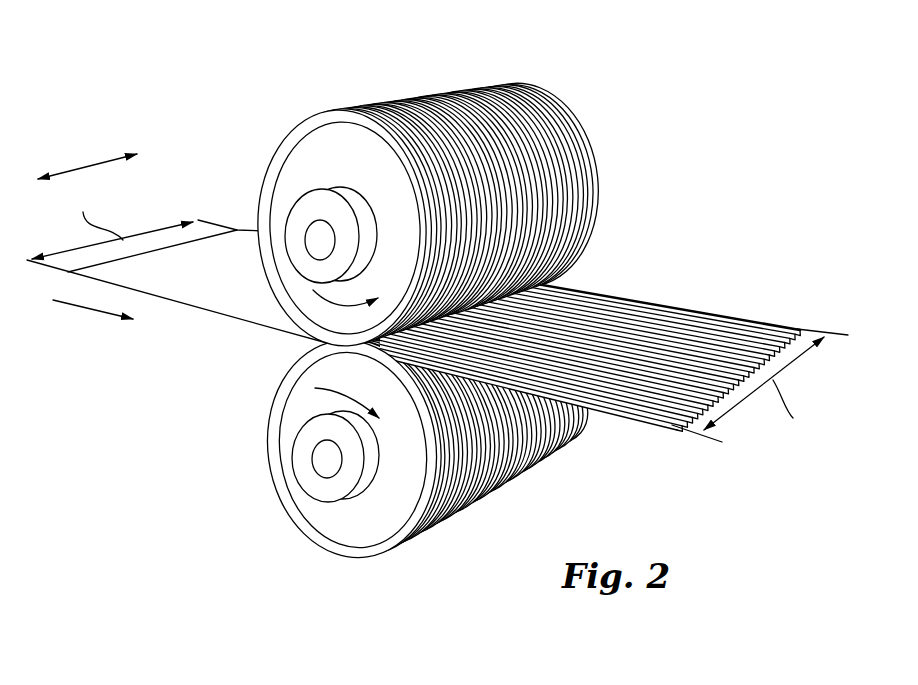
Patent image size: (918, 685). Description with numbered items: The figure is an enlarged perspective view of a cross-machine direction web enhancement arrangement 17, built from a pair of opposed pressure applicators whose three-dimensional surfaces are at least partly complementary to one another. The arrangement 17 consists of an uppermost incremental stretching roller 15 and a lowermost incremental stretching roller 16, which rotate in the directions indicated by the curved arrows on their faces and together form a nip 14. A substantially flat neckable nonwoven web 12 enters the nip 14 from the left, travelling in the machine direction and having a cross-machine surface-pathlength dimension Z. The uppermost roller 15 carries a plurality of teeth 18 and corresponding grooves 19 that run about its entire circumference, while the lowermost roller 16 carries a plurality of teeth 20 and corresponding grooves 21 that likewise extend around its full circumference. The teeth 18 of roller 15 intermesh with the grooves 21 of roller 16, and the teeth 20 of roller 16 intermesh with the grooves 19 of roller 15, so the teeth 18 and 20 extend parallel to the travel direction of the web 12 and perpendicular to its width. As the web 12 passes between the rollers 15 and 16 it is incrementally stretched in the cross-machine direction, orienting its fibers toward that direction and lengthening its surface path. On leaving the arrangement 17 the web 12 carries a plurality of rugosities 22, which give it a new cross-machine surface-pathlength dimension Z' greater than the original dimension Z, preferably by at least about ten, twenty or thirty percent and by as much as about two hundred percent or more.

The neckable nonwoven web 12 is at (237, 287).
The nip 14 is at (273, 338).
The incremental stretching roller 15 is at (268, 174).
The incremental stretching roller 16 is at (325, 513).
The cross-machine direction web enhancement arrangement 17 is at (250, 119).
The teeth 18 is at (318, 108).
The grooves 19 is at (377, 114).
The teeth 20 is at (392, 559).
The grooves 21 is at (445, 503).
The rugosities 22 is at (716, 392).